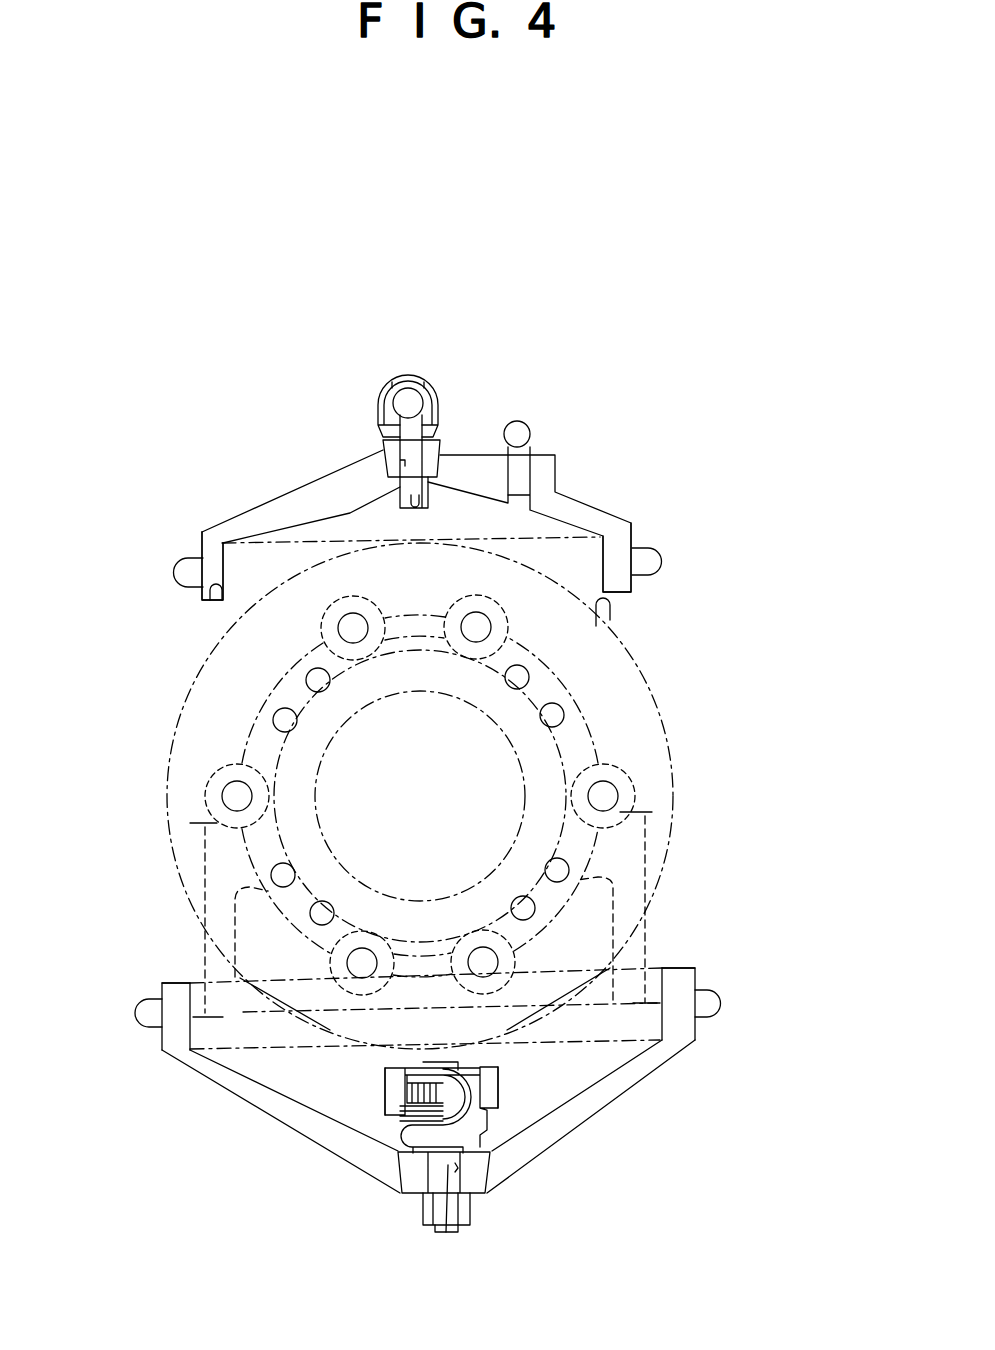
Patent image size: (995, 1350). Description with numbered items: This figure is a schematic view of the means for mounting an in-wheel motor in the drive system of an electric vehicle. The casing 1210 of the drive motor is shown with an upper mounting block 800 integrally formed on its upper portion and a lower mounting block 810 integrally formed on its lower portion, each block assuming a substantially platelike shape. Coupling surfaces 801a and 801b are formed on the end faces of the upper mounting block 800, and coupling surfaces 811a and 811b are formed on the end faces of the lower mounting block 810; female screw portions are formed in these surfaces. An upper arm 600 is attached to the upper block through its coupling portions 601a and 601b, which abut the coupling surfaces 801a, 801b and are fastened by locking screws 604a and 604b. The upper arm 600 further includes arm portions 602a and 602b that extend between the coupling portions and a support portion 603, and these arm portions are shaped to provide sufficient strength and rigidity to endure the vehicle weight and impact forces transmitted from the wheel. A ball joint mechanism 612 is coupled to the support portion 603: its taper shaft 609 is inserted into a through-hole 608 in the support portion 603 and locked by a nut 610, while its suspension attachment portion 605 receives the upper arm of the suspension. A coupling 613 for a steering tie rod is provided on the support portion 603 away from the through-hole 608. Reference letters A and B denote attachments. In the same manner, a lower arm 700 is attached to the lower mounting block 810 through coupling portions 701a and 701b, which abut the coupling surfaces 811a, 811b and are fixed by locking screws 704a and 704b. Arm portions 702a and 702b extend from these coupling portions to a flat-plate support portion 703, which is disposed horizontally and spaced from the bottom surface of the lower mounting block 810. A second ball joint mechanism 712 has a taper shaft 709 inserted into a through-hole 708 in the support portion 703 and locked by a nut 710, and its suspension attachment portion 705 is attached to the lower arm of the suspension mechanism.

The upper arm 600 is at (429, 506).
The coupling portion 601a is at (618, 593).
The coupling portion 601b is at (198, 546).
The arm portion 602a is at (580, 511).
The arm portion 602b is at (335, 491).
The support portion 603 is at (433, 430).
The locking screw 604a is at (653, 562).
The locking screw 604b is at (180, 578).
The suspension attachment portion 605 is at (437, 381).
The through-hole 608 is at (386, 462).
The taper shaft 609 is at (408, 447).
The nut 610 is at (320, 518).
The ball joint mechanism 612 is at (366, 390).
The coupling 613 is at (519, 433).
The lower arm 700 is at (443, 1099).
The coupling portion 701a is at (696, 982).
The coupling portion 701b is at (163, 1046).
The arm portion 702a is at (543, 1140).
The arm portion 702b is at (255, 1100).
The support portion 703 is at (417, 1178).
The locking screw 704a is at (720, 1003).
The locking screw 704b is at (150, 1010).
The suspension attachment portion 705 is at (395, 1093).
The through-hole 708 is at (480, 1175).
The taper shaft 709 is at (446, 1232).
The nut 710 is at (480, 1210).
The ball joint mechanism 712 is at (361, 1189).
The upper mounting block 800 is at (570, 578).
The coupling surface 801a is at (598, 610).
The coupling surface 801b is at (207, 601).
The lower mounting block 810 is at (238, 1026).
The coupling surface 811a is at (665, 966).
The coupling surface 811b is at (165, 986).
The casing 1210 is at (683, 795).
The attachment A is at (575, 474).
The attachment B is at (589, 1140).